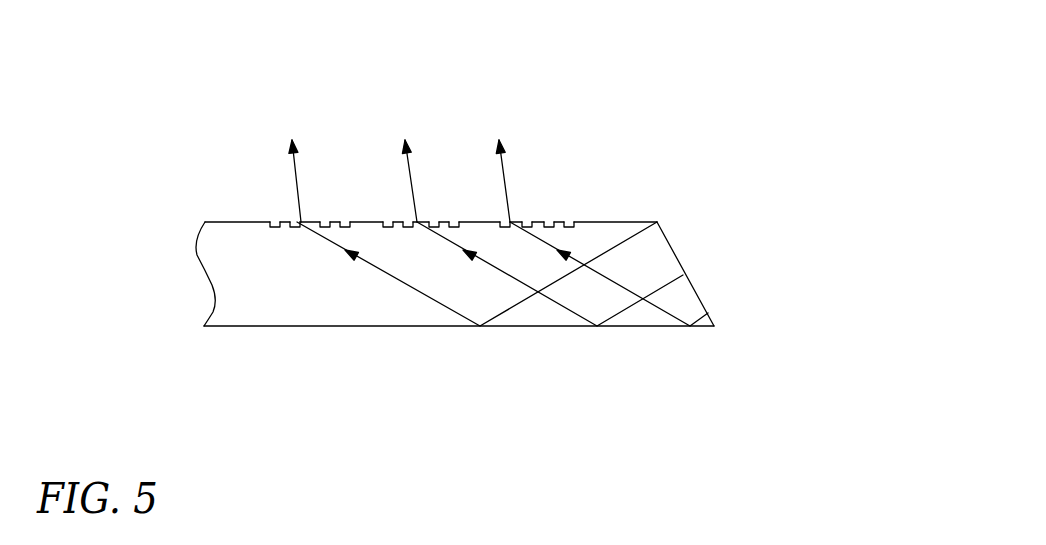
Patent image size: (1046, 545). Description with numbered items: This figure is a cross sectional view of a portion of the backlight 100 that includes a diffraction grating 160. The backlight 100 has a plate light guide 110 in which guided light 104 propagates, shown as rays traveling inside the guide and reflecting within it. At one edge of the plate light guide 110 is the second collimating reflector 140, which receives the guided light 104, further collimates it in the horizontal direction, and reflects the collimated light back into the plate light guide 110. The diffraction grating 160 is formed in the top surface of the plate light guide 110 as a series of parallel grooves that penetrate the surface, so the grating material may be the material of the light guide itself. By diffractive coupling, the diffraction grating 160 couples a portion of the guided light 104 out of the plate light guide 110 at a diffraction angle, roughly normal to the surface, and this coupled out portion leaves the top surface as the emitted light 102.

The backlight 100 is at (748, 77).
The emitted light 102 is at (540, 170).
The guided light 104 is at (422, 305).
The plate light guide 110 is at (203, 271).
The second collimating reflector 140 is at (685, 260).
The diffraction grating 160 is at (552, 213).